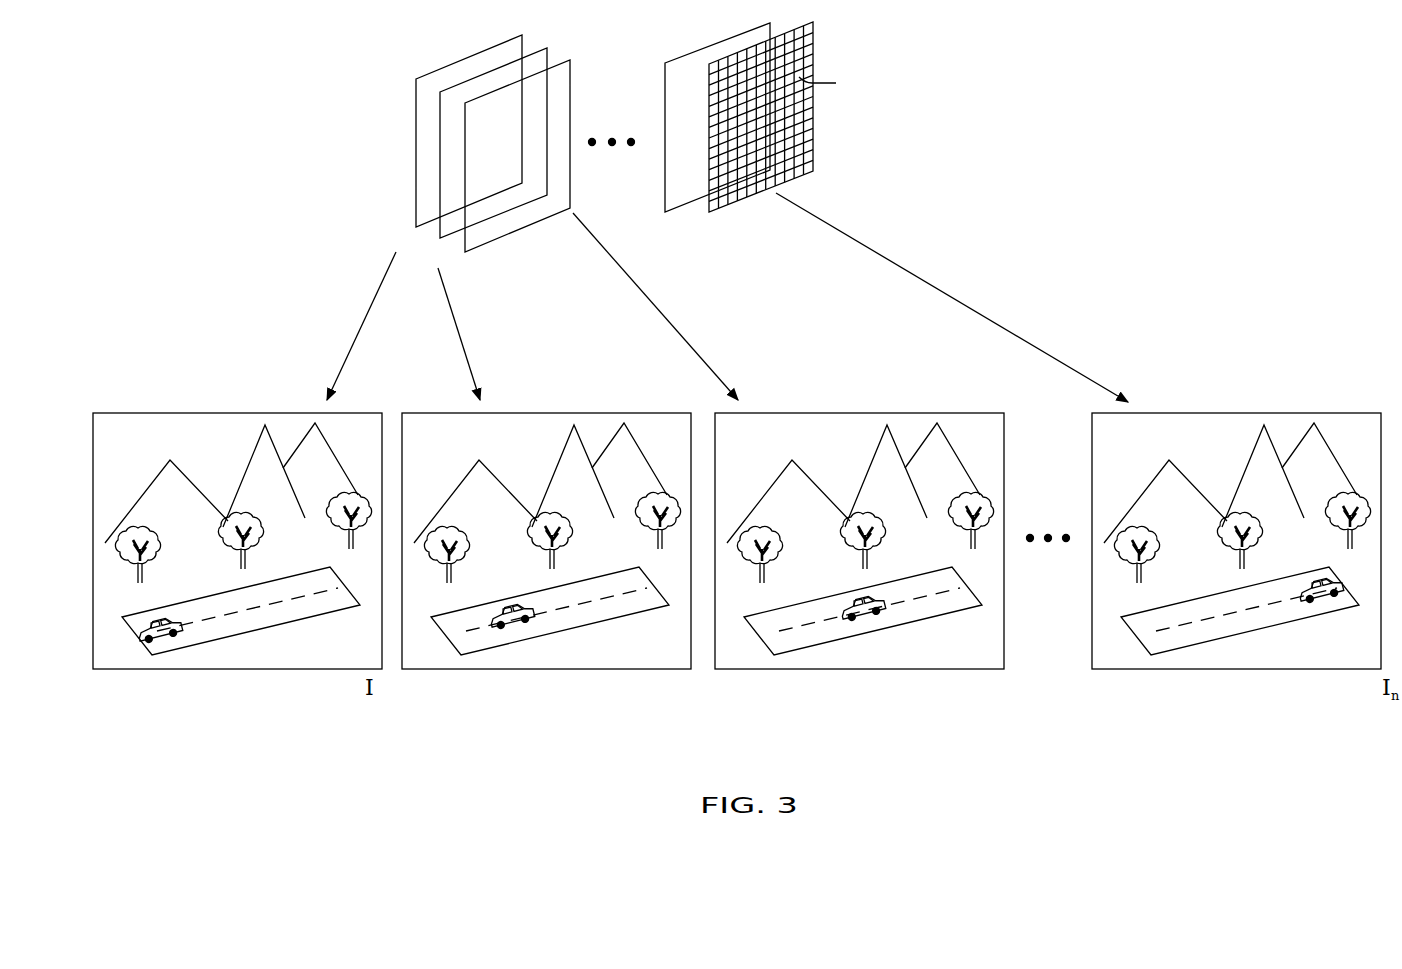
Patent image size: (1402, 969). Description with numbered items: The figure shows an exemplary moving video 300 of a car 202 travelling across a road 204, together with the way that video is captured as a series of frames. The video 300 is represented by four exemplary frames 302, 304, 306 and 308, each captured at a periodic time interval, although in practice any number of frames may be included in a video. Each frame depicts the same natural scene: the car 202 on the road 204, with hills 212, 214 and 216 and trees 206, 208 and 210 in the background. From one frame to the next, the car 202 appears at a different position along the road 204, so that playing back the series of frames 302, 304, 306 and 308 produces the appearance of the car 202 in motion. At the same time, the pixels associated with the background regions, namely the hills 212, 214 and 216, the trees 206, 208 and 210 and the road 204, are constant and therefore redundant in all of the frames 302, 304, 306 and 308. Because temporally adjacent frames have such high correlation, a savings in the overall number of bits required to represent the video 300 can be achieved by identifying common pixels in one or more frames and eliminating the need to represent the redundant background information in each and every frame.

The moving video 300 is at (242, 117).
The frame 302 is at (195, 413).
The frame 304 is at (504, 413).
The frame 306 is at (817, 413).
The frame 308 is at (1194, 413).
The car 202 is at (138, 634).
The road 204 is at (278, 626).
The tree 206 is at (160, 553).
The tree 208 is at (263, 545).
The tree 210 is at (330, 508).
The hill 212 is at (165, 466).
The hill 214 is at (255, 448).
The hill 216 is at (327, 442).